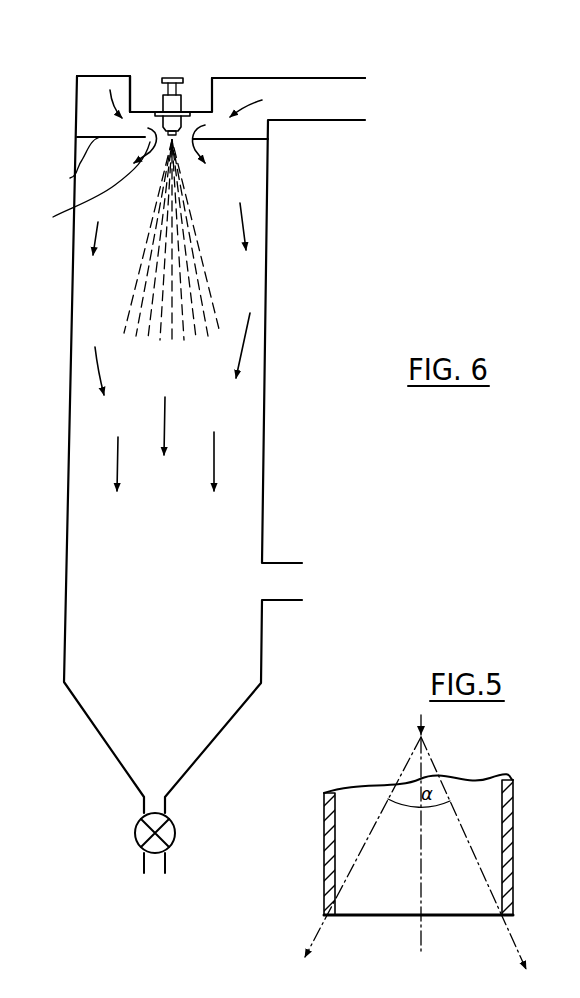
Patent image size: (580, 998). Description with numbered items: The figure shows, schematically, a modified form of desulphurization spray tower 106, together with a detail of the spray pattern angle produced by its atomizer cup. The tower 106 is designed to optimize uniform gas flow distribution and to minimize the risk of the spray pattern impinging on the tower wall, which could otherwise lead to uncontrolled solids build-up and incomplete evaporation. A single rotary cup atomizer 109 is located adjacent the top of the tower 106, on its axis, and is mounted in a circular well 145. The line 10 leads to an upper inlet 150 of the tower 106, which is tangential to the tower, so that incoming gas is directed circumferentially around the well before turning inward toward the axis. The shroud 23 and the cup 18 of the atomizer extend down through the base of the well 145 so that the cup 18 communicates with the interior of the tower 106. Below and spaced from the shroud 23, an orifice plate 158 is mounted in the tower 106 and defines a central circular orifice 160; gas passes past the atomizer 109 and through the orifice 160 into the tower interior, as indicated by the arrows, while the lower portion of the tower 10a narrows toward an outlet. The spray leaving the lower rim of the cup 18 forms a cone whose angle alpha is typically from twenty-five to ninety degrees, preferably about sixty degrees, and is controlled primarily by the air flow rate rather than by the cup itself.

In FIG. 6, the line 10 is at (316, 120).
In FIG. 6, the lower chamber section 10a is at (289, 602).
In FIG. 6, the shroud 23 is at (200, 128).
In FIG. 6, the tower 106 is at (266, 343).
In FIG. 6, the rotary cup atomizer 109 is at (185, 77).
In FIG. 6, the circular well 145 is at (142, 58).
In FIG. 6, the upper inlet 150 is at (270, 77).
In FIG. 6, the orifice plate 158 is at (62, 169).
In FIG. 6, the central circular orifice 160 is at (87, 190).
In FIG. 5, the cup 18 is at (517, 778).